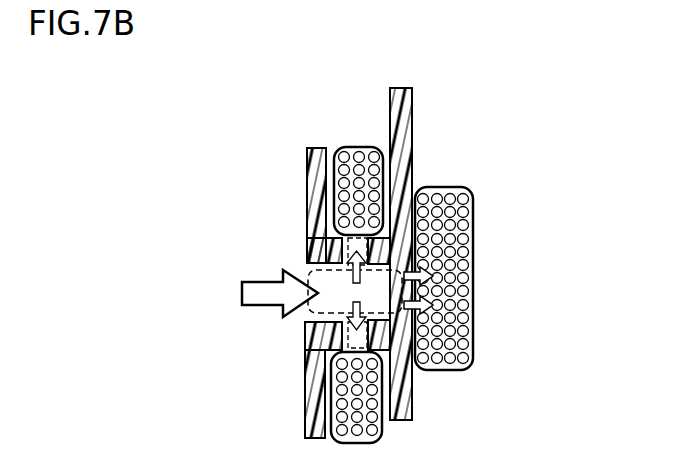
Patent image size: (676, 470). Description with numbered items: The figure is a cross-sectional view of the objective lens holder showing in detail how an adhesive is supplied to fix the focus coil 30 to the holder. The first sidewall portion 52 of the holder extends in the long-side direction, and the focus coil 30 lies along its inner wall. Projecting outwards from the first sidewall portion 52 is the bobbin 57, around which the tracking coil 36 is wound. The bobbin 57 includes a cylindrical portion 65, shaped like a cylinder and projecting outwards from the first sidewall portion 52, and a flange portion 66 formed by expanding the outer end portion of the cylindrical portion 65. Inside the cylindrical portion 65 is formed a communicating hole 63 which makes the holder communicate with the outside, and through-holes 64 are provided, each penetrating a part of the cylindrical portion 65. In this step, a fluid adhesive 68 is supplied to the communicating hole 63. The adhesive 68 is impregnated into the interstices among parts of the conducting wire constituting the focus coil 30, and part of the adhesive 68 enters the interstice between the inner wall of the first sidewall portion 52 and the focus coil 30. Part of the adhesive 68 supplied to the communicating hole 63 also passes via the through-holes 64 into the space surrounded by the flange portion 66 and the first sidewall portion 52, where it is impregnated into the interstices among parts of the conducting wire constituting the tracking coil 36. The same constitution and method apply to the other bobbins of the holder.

The focus coil 30 is at (452, 187).
The tracking coil 36 is at (354, 147).
The first sidewall portion 52 is at (397, 94).
The bobbin 57 is at (267, 205).
The communicating hole 63 is at (303, 313).
The through-holes 64 is at (333, 248).
The cylindrical portion 65 is at (330, 250).
The flange portion 66 is at (306, 181).
The adhesive 68 is at (250, 293).